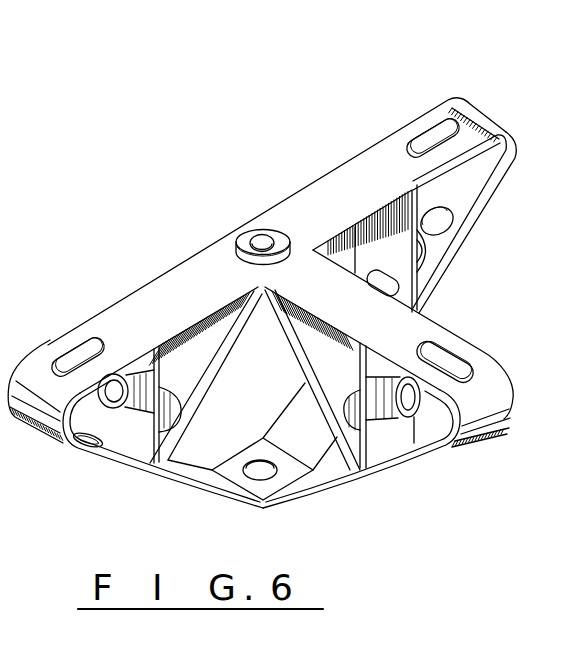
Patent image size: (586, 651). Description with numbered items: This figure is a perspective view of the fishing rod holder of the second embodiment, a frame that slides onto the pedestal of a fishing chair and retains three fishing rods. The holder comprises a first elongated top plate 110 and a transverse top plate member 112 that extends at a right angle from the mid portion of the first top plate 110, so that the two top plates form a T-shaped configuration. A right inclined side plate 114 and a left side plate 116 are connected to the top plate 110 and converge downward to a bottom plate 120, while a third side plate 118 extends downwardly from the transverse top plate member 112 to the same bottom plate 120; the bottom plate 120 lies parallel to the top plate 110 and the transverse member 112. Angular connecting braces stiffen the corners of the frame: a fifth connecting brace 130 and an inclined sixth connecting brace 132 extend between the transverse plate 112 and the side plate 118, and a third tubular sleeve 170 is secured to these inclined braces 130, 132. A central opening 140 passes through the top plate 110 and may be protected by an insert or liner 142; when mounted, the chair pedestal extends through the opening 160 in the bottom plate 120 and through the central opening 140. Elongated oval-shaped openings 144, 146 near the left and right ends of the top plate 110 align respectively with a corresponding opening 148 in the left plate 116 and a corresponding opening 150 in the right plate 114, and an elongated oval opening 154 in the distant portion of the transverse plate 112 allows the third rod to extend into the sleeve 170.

The first elongated top plate 110 is at (177, 293).
The transverse top plate member 112 is at (408, 328).
The right inclined side plate 114 is at (473, 178).
The left side plate 116 is at (190, 470).
The third side plate 118 is at (330, 472).
The bottom plate 120 is at (262, 452).
The fifth connecting brace 130 is at (378, 440).
The sixth connecting brace 132 is at (307, 350).
The central opening 140 is at (258, 240).
The insert or liner 142 is at (281, 232).
The elongated oval-shaped opening 144 is at (72, 363).
The elongated oval-shaped opening 146 is at (430, 140).
The corresponding opening 148 is at (88, 446).
The corresponding opening 150 is at (437, 223).
The elongated oval opening 154 is at (447, 370).
The opening 160 is at (260, 475).
The third tubular sleeve 170 is at (350, 395).